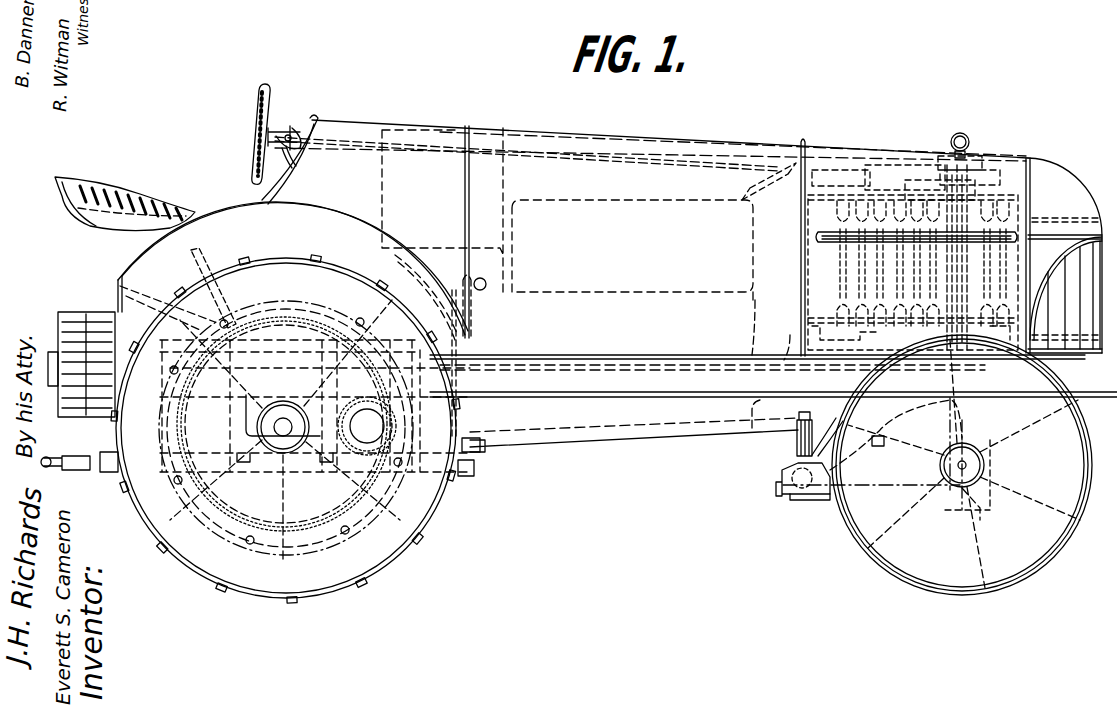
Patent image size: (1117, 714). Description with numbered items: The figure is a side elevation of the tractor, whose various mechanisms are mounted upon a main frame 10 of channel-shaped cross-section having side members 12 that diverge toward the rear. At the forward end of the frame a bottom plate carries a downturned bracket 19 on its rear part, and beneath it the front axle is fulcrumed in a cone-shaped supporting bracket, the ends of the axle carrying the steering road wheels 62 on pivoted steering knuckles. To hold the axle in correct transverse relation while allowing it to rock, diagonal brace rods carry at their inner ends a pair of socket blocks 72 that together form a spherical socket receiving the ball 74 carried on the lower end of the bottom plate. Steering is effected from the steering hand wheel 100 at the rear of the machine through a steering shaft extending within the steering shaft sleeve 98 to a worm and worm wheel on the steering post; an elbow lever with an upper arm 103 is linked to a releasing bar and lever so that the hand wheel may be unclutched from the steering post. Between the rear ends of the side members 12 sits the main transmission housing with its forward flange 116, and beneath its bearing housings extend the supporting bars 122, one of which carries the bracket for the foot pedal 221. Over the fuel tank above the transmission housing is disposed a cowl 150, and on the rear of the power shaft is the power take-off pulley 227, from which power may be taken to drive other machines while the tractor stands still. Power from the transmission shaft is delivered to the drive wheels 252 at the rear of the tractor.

The main frame 10 is at (716, 407).
The side members 12 is at (664, 385).
The downturned bracket 19 is at (798, 444).
The steering road wheels 62 is at (1068, 530).
The socket blocks 72 is at (792, 496).
The ball 74 is at (780, 481).
The steering shaft sleeve 98 is at (292, 134).
The steering hand wheel 100 is at (271, 112).
The upper arm 103 is at (288, 164).
The forward flange 116 is at (472, 444).
The supporting bars 122 is at (464, 477).
The cowl 150 is at (402, 110).
The foot pedal 221 is at (432, 334).
The power take-off pulley 227 is at (82, 416).
The drive wheels 252 is at (402, 552).